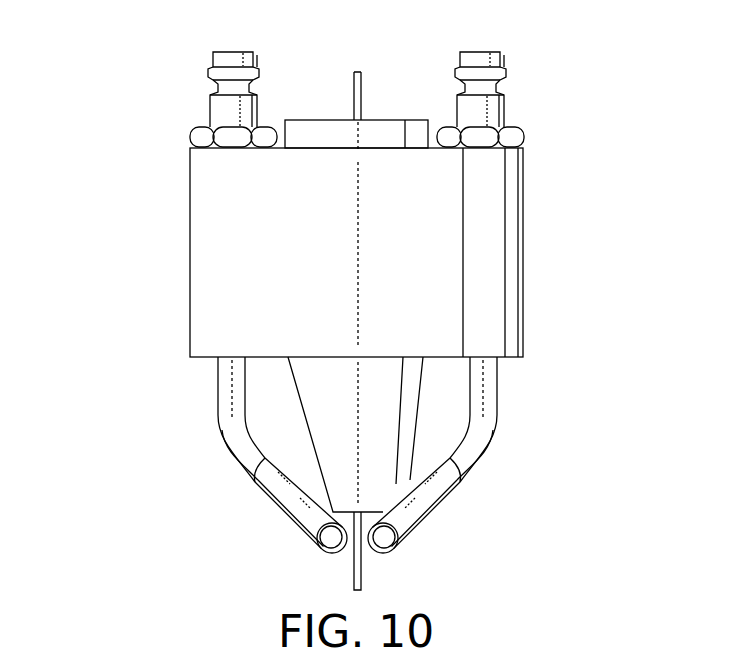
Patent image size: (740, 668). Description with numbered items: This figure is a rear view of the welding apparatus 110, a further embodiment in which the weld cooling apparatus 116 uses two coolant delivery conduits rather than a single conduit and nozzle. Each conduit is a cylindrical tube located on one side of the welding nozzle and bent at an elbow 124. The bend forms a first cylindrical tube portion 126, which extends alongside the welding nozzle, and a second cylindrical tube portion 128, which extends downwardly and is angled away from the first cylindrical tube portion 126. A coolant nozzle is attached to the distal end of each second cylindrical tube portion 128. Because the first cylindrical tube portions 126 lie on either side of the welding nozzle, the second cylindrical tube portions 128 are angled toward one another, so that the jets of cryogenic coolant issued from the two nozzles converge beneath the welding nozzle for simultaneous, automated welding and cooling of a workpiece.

The welding apparatus 110 is at (165, 62).
The weld cooling apparatus 116 is at (505, 445).
The elbow 124 is at (220, 438).
The first cylindrical tube portion 126 is at (217, 372).
The second cylindrical tube portion 128 is at (250, 464).